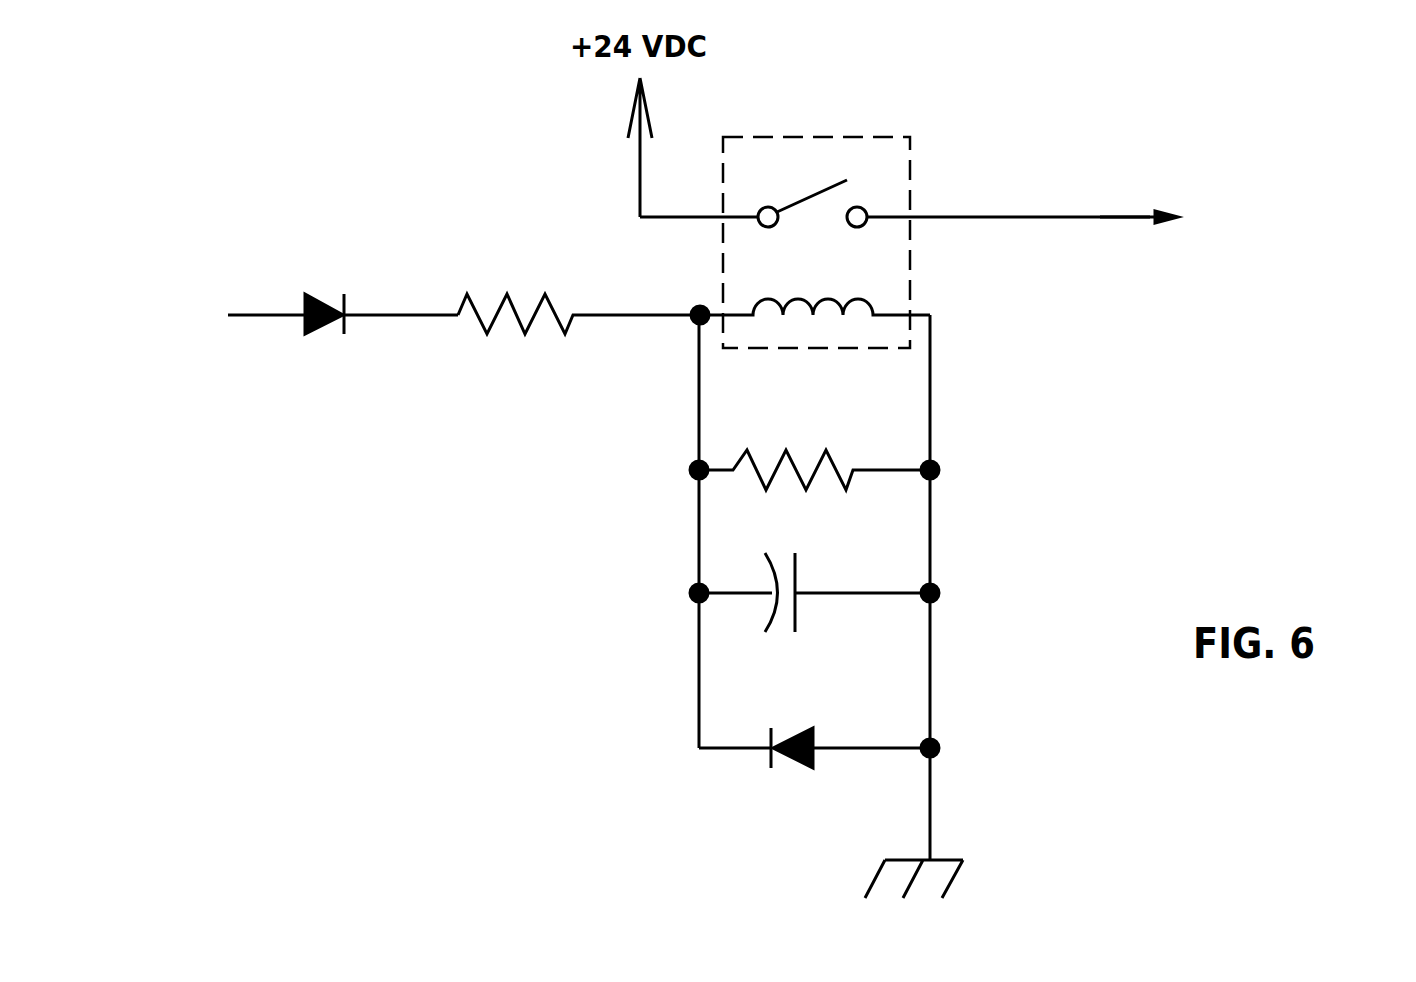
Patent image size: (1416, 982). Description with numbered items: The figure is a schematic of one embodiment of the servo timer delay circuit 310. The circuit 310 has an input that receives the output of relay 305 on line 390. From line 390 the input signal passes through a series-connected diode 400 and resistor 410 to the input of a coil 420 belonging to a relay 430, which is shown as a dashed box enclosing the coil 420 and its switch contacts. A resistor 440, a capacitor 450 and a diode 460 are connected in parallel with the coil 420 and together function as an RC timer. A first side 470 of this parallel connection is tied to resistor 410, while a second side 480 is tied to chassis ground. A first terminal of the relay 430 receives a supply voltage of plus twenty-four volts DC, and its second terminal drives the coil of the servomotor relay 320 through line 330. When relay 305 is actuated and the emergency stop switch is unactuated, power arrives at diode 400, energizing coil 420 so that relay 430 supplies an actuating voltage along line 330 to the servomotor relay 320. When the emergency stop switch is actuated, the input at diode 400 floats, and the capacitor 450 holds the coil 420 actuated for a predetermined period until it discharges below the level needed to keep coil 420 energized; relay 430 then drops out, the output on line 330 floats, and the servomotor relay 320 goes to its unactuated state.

The relay 305 is at (200, 428).
The servo timer delay circuit 310 is at (455, 593).
The servomotor relay 320 is at (1280, 238).
The line (output of relay 430) 330 is at (1012, 219).
The line (input line) 390 is at (260, 315).
The diode 400 is at (322, 302).
The resistor 410 is at (525, 333).
The coil 420 is at (867, 297).
The relay 430 is at (852, 137).
The resistor 440 is at (786, 450).
The capacitor 450 is at (800, 567).
The diode 460 is at (813, 733).
The first side of the parallel connection 470 is at (698, 395).
The second side of the parallel connection 480 is at (930, 417).